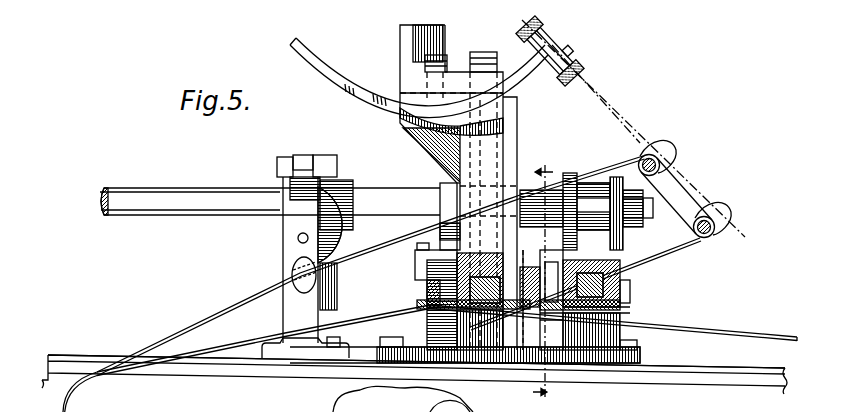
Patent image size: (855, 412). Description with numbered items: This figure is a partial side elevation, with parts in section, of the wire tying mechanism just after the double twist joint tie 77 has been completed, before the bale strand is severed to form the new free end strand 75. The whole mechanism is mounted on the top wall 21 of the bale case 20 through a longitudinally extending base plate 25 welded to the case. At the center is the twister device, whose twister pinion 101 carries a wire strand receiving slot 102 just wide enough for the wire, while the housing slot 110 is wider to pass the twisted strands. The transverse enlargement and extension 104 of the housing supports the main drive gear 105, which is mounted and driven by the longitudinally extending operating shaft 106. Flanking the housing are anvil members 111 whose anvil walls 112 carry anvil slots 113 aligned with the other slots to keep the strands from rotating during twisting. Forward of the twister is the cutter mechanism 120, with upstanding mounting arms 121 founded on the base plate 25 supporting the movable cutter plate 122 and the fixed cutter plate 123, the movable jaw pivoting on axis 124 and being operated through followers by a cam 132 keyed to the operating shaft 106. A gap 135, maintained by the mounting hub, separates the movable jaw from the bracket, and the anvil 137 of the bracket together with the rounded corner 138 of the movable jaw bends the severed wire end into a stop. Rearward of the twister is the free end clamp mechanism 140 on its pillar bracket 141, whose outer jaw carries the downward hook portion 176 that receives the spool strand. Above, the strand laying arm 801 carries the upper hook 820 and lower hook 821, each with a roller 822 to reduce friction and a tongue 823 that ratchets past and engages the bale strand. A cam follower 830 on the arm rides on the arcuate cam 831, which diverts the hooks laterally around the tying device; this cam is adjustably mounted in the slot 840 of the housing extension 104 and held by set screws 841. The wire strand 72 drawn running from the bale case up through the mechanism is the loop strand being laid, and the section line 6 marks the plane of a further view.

The section line 6- 6 is at (543, 281).
The bale case 20 is at (50, 380).
The top wall 21 is at (170, 372).
The base plate 25 is at (72, 355).
The cable 72 is at (377, 312).
The new free end strand 75 is at (732, 328).
The double twist joint tie 77 is at (497, 367).
The twister pinion 101 is at (427, 283).
The wire strand receiving slot 102 is at (500, 357).
The transverse enlargement and extension of housing 104 is at (463, 170).
The main drive gear 105 is at (433, 153).
The operating shaft 106 is at (180, 178).
The housing slot 110 is at (463, 350).
The anvil member 111 is at (417, 262).
The anvil wall 112 is at (437, 330).
The anvil slot 113 is at (413, 312).
The cutter mechanism 120 is at (625, 305).
The mounting arm 121 is at (617, 335).
The movable cutter plate 122 is at (633, 313).
The fixed cutter plate 123 is at (590, 270).
The pivot axis 124 is at (630, 278).
The cam 132 is at (580, 183).
The gap 135 is at (633, 245).
The anvil 137 is at (633, 260).
The rounded corner 138 is at (627, 295).
The free end clamp mechanism 140 is at (277, 242).
The pillar bracket 141 is at (283, 313).
The hook portion 176 is at (292, 264).
The arm 801 is at (617, 108).
The hook 820 is at (650, 143).
The hook 821 is at (718, 210).
The roller 822 is at (662, 175).
The tongue 823 is at (676, 150).
The cam follower 830 is at (578, 46).
The arcuate cam 831 is at (348, 85).
The slot 840 is at (405, 115).
The set screw 841 is at (445, 55).